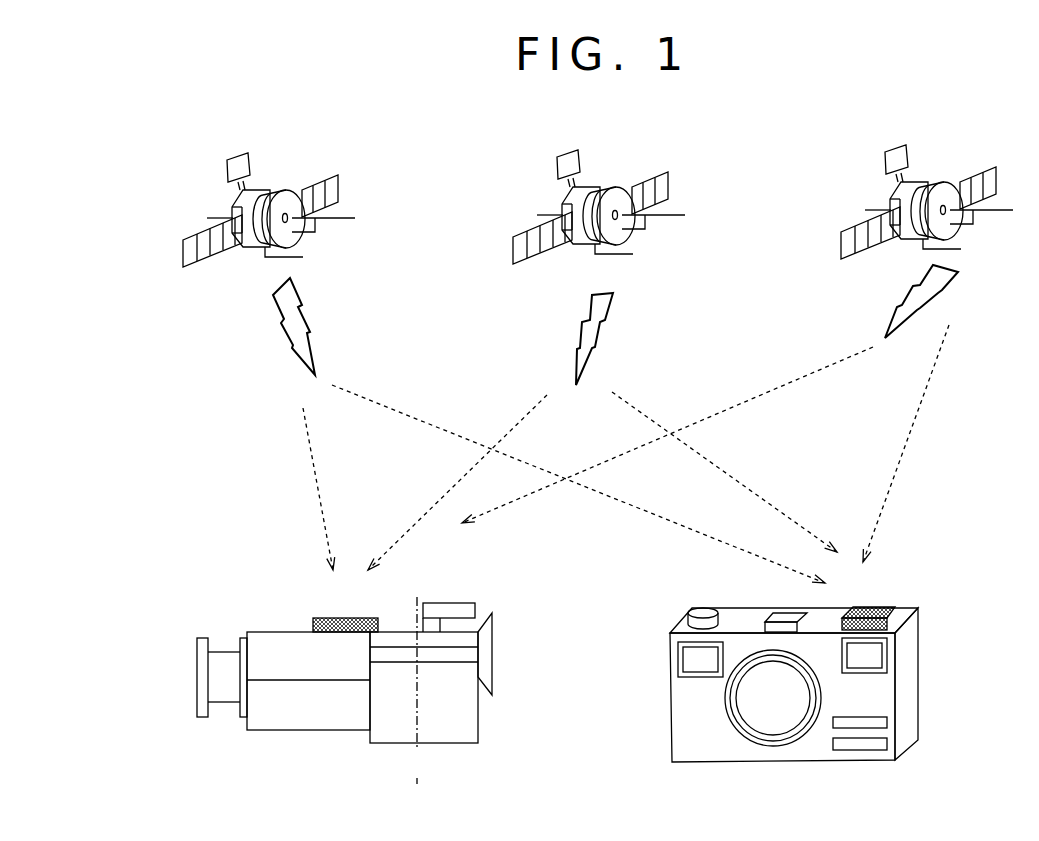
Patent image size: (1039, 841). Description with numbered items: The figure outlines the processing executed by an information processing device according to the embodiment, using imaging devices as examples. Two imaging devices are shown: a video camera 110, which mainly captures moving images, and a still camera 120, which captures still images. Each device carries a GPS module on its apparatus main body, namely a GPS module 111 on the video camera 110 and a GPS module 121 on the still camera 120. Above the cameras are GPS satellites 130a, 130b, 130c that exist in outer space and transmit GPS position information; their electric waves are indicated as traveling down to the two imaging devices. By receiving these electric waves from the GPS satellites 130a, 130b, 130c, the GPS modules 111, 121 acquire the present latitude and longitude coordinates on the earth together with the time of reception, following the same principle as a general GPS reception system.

The video camera 110 is at (344, 680).
The GPS module 111 is at (373, 620).
The still camera 120 is at (831, 659).
The GPS module 121 is at (877, 608).
The GPS satellite 130a is at (287, 192).
The GPS satellite 130b is at (617, 189).
The GPS satellite 130c is at (946, 184).